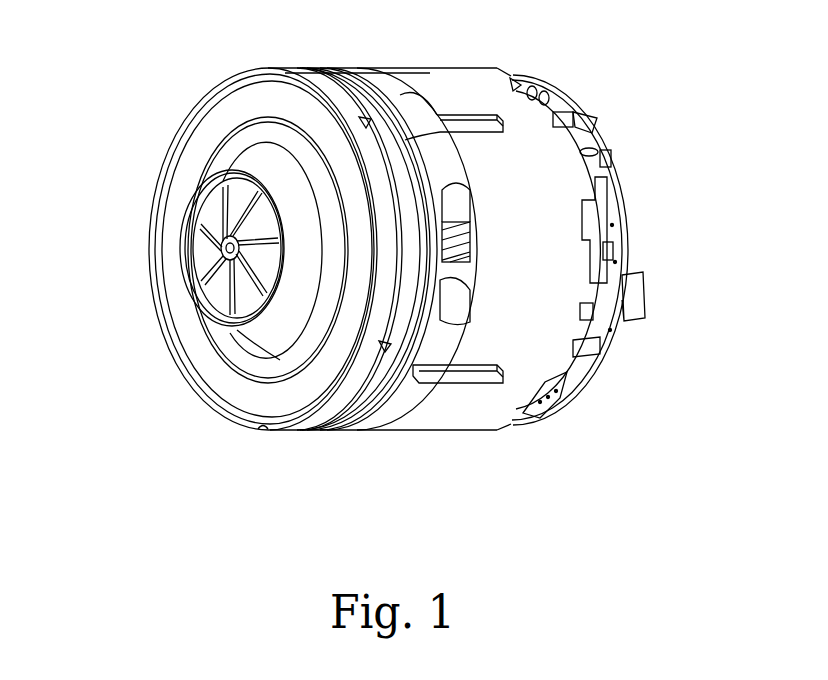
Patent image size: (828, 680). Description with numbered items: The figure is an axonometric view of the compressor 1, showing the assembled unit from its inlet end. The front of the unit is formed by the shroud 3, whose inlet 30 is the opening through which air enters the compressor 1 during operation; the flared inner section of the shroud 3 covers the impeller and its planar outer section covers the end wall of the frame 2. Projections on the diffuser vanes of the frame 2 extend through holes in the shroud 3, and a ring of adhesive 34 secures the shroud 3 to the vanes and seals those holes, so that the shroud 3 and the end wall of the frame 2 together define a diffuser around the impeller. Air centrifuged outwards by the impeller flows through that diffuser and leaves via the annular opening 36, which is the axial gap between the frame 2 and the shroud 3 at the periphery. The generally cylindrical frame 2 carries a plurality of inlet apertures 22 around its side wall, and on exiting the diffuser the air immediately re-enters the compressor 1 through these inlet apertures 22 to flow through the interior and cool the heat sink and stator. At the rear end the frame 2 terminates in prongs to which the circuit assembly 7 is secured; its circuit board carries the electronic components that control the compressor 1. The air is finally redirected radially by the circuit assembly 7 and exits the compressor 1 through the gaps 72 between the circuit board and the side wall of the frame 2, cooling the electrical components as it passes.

The compressor 1 is at (127, 82).
The frame 2 is at (438, 430).
The shroud 3 is at (200, 403).
The circuit assembly 7 is at (575, 403).
The inlet apertures 22 is at (411, 98).
The inlet 30 is at (205, 214).
The ring of adhesive 34 is at (176, 302).
The annular opening 36 is at (331, 430).
The gaps 72 is at (597, 197).